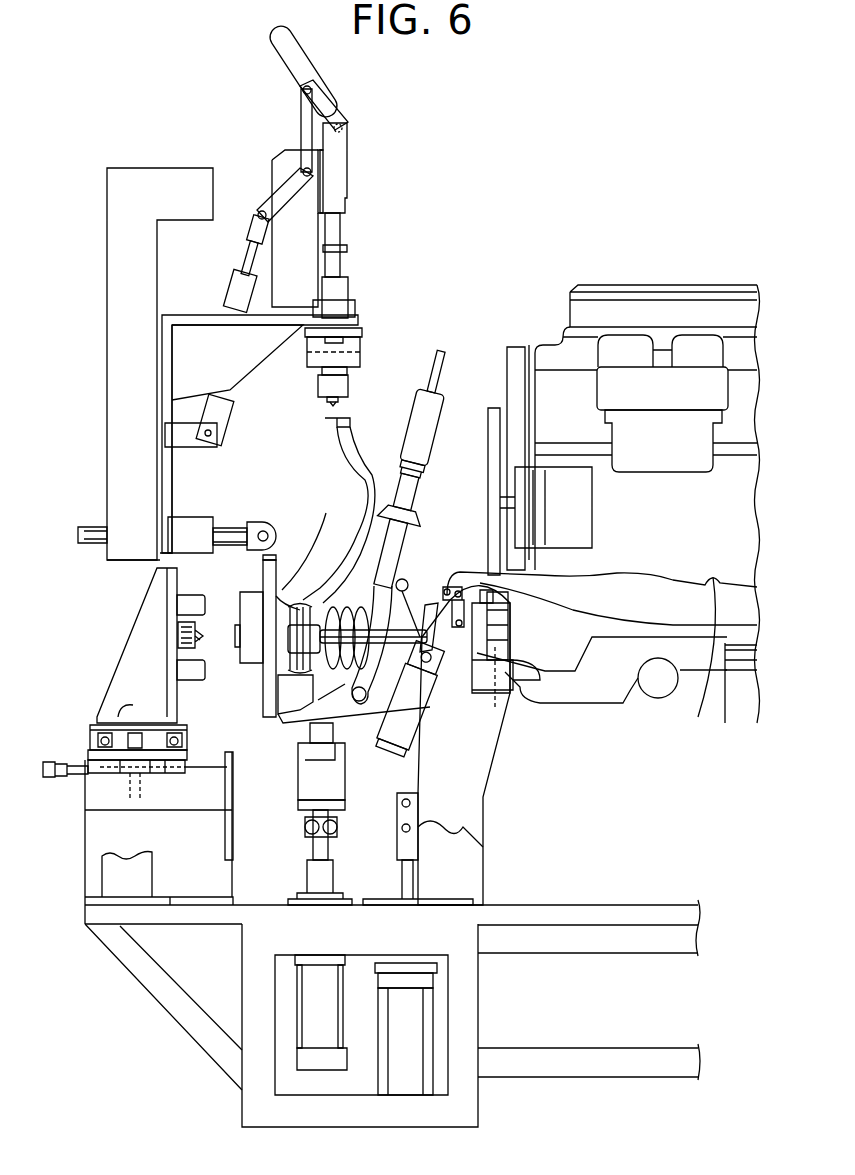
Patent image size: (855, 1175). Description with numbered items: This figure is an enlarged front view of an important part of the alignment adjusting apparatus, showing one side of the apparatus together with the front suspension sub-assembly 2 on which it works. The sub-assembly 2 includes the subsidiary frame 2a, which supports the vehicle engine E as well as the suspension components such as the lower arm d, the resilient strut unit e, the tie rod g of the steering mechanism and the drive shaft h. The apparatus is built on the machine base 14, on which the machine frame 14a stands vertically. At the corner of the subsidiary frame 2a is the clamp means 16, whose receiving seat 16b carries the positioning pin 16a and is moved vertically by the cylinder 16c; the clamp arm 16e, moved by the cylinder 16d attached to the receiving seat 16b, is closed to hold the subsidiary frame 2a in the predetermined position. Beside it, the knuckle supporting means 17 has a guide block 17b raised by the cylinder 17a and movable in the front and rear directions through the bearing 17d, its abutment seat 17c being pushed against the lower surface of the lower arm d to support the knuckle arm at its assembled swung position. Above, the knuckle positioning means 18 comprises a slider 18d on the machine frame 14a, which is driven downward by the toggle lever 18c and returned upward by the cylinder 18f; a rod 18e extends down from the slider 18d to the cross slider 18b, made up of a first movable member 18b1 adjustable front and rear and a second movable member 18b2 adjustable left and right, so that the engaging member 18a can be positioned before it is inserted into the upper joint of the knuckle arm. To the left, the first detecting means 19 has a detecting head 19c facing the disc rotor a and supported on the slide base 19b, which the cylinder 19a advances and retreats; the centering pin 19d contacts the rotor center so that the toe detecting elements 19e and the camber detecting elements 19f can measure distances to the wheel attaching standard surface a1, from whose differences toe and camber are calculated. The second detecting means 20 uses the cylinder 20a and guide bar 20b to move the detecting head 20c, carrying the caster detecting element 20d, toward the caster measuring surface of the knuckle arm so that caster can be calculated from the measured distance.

The front suspension sub-assembly 2 is at (579, 275).
The subsidiary frame 2a is at (602, 658).
The vehicle engine E is at (603, 484).
The machine base 14 is at (568, 912).
The machine frame 14a is at (110, 290).
The clamp means 16 is at (470, 745).
The positioning pin 16a is at (505, 708).
The receiving seat 16b is at (490, 750).
The cylinder 16c is at (420, 1062).
The cylinder 16d is at (402, 758).
The clamp arm 16e is at (510, 612).
The knuckle supporting means 17 is at (287, 814).
The cylinder 17a is at (315, 1045).
The guide block 17b is at (305, 800).
The abutment seat 17c is at (310, 733).
The bearing 17d is at (303, 760).
The knuckle positioning means 18 is at (354, 299).
The engaging member 18a is at (328, 402).
The cross slider 18b is at (362, 332).
The first movable member 18b1 is at (350, 346).
The second movable member 18b2 is at (355, 375).
The toggle lever 18c is at (322, 105).
The slider 18d is at (340, 160).
The rod 18e is at (340, 233).
The cylinder 18f is at (240, 292).
The first detecting means 19 is at (140, 714).
The cylinder 19a is at (78, 780).
The slide base 19b is at (120, 716).
The detecting head 19c is at (135, 643).
The centering pin 19d is at (200, 640).
The toe detecting element 19e is at (180, 638).
The camber detecting element 19f is at (180, 602).
The second detecting means 20 is at (209, 510).
The cylinder 20a is at (88, 525).
The guide bar 20b is at (235, 525).
The detecting head 20c is at (258, 522).
The caster detecting element 20d is at (263, 562).
The disc rotor a is at (255, 680).
The wheel attaching standard surface a1 is at (242, 606).
The lower arm d is at (376, 712).
The resilient strut unit e is at (430, 412).
The tie rod g is at (352, 600).
The drive shaft h is at (410, 608).